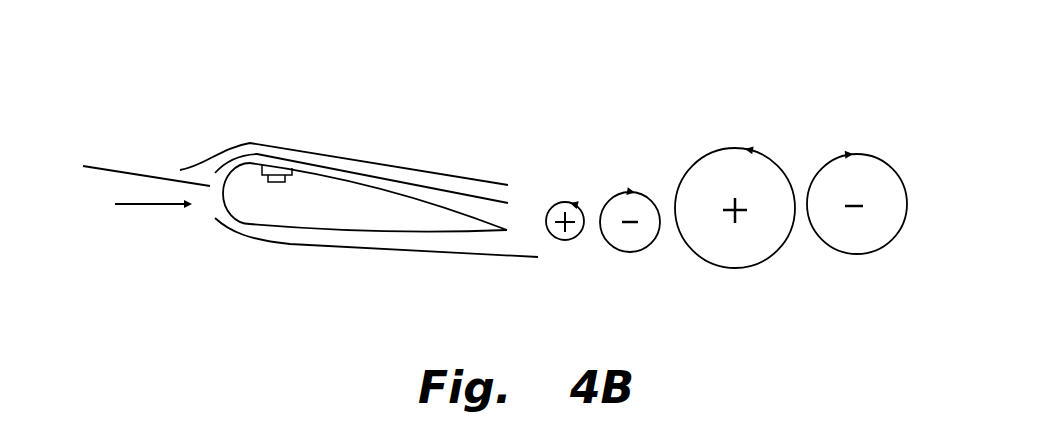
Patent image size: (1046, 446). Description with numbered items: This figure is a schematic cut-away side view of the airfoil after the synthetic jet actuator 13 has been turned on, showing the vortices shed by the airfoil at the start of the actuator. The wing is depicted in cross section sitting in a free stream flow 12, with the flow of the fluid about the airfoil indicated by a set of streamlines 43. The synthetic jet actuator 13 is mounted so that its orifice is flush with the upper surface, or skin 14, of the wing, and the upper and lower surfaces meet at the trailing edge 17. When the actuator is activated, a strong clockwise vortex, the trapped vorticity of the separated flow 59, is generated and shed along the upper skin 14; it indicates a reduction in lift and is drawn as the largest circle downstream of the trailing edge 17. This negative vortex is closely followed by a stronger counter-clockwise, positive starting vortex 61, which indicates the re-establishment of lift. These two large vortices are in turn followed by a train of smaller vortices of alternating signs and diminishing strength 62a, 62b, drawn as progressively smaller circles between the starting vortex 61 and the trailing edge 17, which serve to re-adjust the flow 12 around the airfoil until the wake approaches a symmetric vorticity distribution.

The free stream flow 12 is at (153, 217).
The synthetic jet actuator 13 is at (275, 182).
The upper surface or skin 14 is at (370, 187).
The streamlines 43 is at (345, 164).
The trailing edge 17 is at (507, 230).
The vortex of diminishing strength 62b is at (570, 240).
The vortex of diminishing strength 62a is at (642, 250).
The starting vortex 61 is at (772, 253).
The trapped vorticity of the separated flow 59 is at (887, 240).